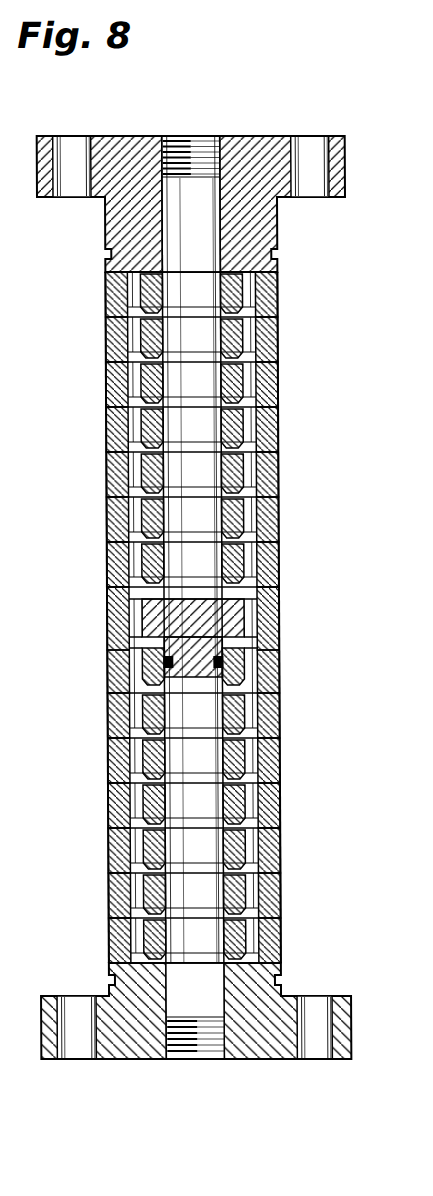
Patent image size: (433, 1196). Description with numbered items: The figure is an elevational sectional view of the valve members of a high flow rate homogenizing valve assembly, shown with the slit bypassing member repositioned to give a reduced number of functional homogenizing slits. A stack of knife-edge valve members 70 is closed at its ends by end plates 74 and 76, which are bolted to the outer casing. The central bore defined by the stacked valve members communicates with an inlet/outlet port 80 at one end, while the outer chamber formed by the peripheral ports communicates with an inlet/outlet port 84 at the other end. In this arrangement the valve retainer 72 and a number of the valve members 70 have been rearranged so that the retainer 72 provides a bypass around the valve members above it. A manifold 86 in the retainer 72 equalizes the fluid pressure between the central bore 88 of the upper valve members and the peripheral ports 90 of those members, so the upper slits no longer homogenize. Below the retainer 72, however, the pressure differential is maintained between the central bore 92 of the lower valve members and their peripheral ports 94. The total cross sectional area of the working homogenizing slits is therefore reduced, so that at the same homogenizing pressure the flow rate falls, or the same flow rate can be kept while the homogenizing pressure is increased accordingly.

The valve members 70 is at (276, 415).
The valve retainer 72 is at (279, 622).
The end plate 74 is at (130, 1061).
The end plate 76 is at (257, 137).
The inlet/outlet port 80 is at (194, 1053).
The inlet/outlet port 84 is at (202, 142).
The manifold 86 is at (138, 592).
The central bore of the upper valve members 88 is at (205, 476).
The peripheral ports of the upper valve members 90 is at (134, 465).
The central bore of the lower valve members 92 is at (207, 810).
The peripheral ports of the lower valve members 94 is at (131, 806).